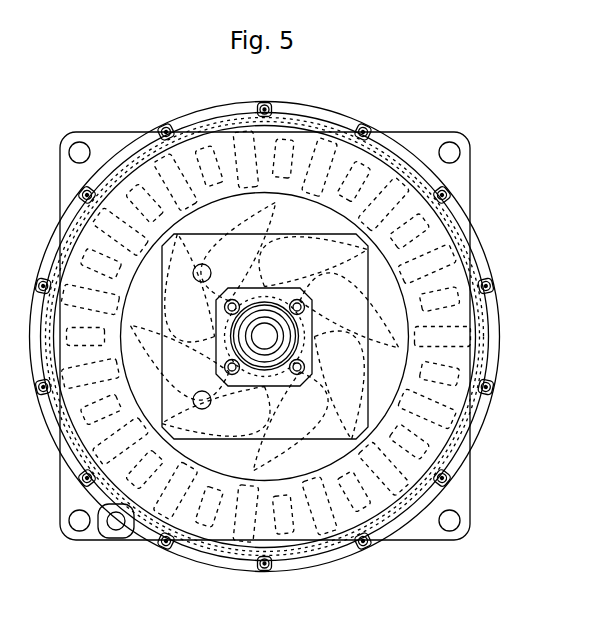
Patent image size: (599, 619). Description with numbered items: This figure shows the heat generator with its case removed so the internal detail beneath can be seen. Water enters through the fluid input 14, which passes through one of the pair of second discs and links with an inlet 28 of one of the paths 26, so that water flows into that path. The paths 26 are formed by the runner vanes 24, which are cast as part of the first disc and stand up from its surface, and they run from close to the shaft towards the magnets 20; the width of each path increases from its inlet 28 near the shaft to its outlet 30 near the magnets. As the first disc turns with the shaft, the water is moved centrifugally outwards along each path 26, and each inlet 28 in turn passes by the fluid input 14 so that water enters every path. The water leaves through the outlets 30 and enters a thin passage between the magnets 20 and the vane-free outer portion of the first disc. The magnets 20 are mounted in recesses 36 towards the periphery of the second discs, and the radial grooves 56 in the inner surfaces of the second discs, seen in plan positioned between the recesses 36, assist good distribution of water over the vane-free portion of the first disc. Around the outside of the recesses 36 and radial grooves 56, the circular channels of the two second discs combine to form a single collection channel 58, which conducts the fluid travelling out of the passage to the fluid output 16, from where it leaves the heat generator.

The fluid input 14 is at (196, 270).
The fluid output 16 is at (118, 150).
The magnets 20 is at (445, 387).
The runner vanes 24 is at (385, 300).
The paths 26 is at (245, 280).
The inlets 28 is at (202, 272).
The outlets 30 is at (245, 213).
The recesses 36 is at (463, 345).
The radial grooves 56 is at (422, 455).
The collection channel 58 is at (465, 252).